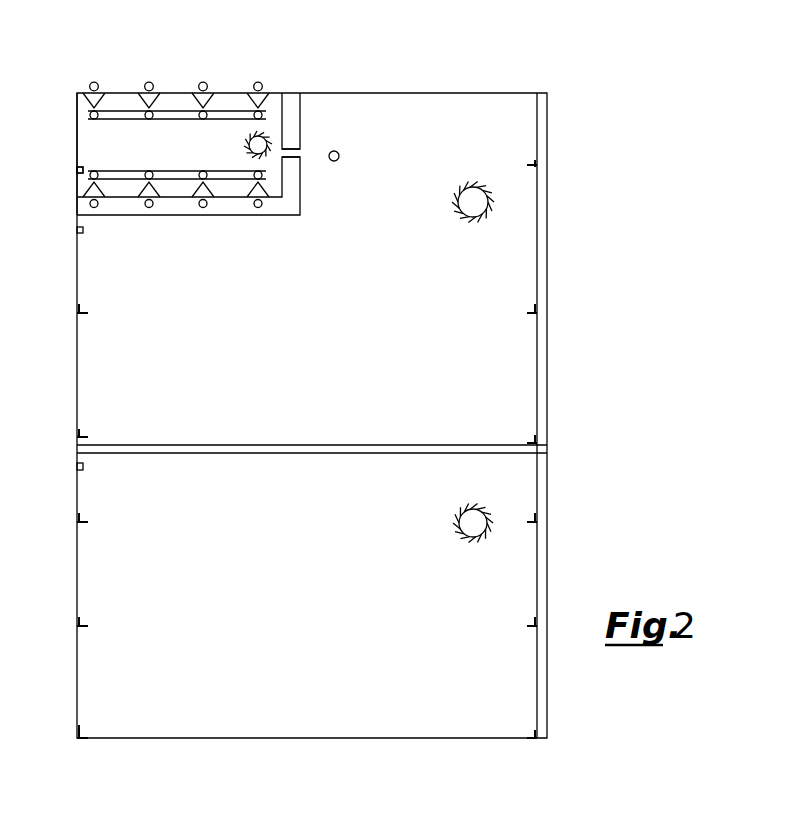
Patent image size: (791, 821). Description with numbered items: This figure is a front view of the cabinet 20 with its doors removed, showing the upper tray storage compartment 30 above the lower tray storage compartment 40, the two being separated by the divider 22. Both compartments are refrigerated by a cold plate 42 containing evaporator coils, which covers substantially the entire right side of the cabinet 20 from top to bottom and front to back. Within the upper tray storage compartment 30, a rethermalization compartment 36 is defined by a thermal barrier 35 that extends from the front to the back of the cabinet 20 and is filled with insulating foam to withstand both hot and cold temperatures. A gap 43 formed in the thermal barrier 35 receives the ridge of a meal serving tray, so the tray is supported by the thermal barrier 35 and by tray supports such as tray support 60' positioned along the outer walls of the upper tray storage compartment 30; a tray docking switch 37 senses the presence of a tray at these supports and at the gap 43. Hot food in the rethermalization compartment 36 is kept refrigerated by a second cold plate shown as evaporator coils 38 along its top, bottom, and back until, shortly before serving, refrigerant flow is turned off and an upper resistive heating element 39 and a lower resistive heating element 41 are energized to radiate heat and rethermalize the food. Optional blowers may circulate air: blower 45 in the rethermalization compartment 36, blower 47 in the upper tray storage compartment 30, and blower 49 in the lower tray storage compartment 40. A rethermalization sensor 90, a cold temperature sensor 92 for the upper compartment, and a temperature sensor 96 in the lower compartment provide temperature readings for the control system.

The cabinet 20 is at (396, 75).
The divider 22 is at (226, 453).
The upper tray storage compartment 30 is at (323, 310).
The thermal barrier 35 is at (300, 207).
The rethermalization compartment 36 is at (80, 125).
The tray docking switch 37 is at (339, 160).
The evaporator coils 38 is at (148, 82).
The upper resistive heating element 39 is at (211, 120).
The lower tray storage compartment 40 is at (323, 622).
The lower resistive heating element 41 is at (166, 171).
The cold plate 42 is at (548, 238).
The gap 43 is at (300, 153).
The blower 45 is at (247, 137).
The blower 47 is at (470, 219).
The blower 49 is at (472, 540).
The tray support 60' is at (111, 151).
The rethermalization sensor 90 is at (77, 169).
The cold temperature sensor 92 is at (77, 230).
The temperature sensor 96 is at (77, 466).